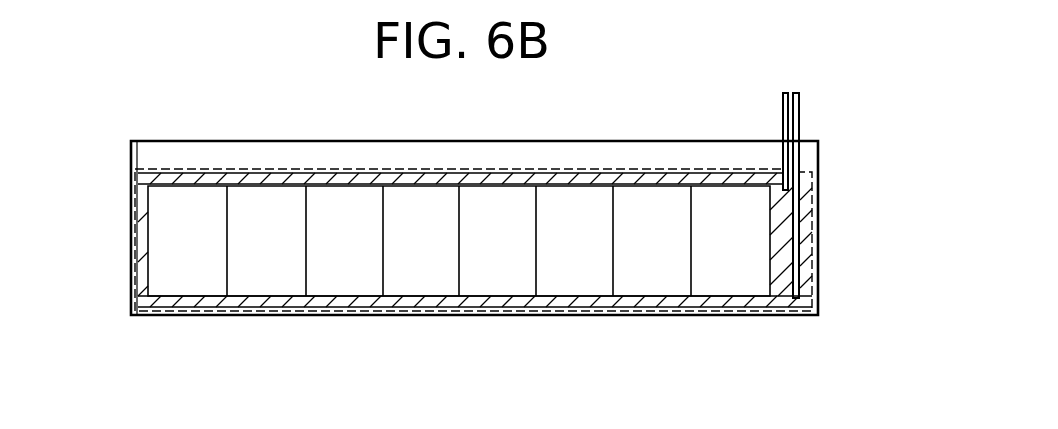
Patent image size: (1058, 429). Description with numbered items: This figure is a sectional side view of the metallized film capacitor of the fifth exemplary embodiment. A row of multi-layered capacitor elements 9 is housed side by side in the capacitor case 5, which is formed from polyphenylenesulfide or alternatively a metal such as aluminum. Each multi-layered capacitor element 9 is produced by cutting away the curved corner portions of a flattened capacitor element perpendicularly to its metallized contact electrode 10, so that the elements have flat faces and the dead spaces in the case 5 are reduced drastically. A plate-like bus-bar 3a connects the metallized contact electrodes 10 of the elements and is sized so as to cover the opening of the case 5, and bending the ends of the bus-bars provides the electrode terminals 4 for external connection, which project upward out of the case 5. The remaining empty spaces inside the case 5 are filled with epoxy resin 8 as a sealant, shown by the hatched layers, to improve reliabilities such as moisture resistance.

The bus-bar 3a is at (422, 169).
The electrode terminals 4 is at (800, 122).
The capacitor case 5 is at (602, 312).
The epoxy resin 8 is at (268, 170).
The multi-layered capacitor element 9 is at (190, 238).
The metallized contact electrode 10 is at (160, 183).